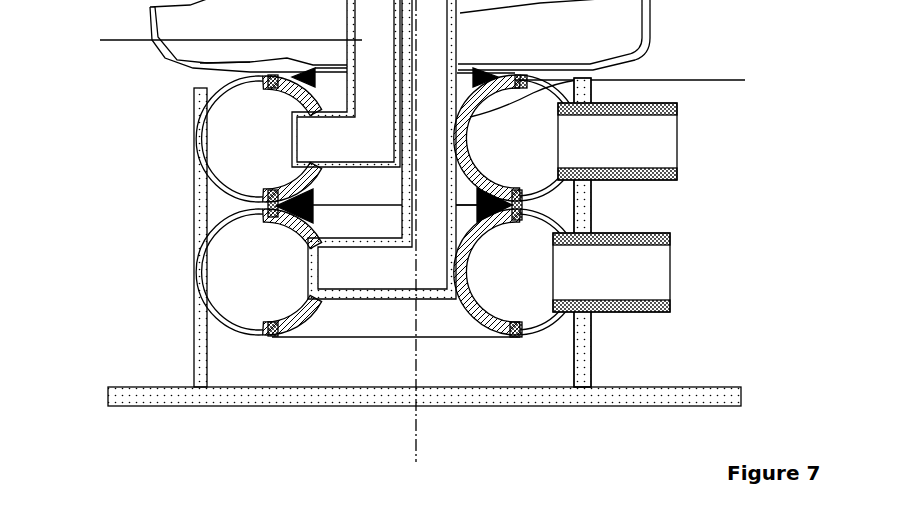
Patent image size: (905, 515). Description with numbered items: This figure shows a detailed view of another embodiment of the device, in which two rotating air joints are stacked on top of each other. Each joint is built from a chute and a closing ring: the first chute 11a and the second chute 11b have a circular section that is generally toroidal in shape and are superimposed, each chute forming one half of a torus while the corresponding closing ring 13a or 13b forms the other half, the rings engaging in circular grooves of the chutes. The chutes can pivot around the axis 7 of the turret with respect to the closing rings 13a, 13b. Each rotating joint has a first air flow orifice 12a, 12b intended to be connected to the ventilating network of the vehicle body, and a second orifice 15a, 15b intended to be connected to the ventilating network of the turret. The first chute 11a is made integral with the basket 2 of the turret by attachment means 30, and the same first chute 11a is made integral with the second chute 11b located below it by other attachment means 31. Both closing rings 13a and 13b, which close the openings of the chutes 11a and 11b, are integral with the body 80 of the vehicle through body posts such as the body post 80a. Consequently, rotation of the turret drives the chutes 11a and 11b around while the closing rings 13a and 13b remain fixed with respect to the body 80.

The basket 2 is at (647, 30).
The axis 7 is at (413, 437).
The first chute 11a is at (745, 80).
The second chute 11b is at (470, 313).
The first air flow orifice 12a is at (653, 147).
The first air flow orifice 12b is at (605, 286).
The closing ring 13a is at (208, 132).
The closing ring 13b is at (232, 232).
The second orifice 15a is at (100, 40).
The second orifice 15b is at (343, 271).
The attachment means 30 is at (198, 62).
The attachment means 31 is at (522, 208).
The body 80 is at (597, 397).
The body post 80a is at (200, 300).